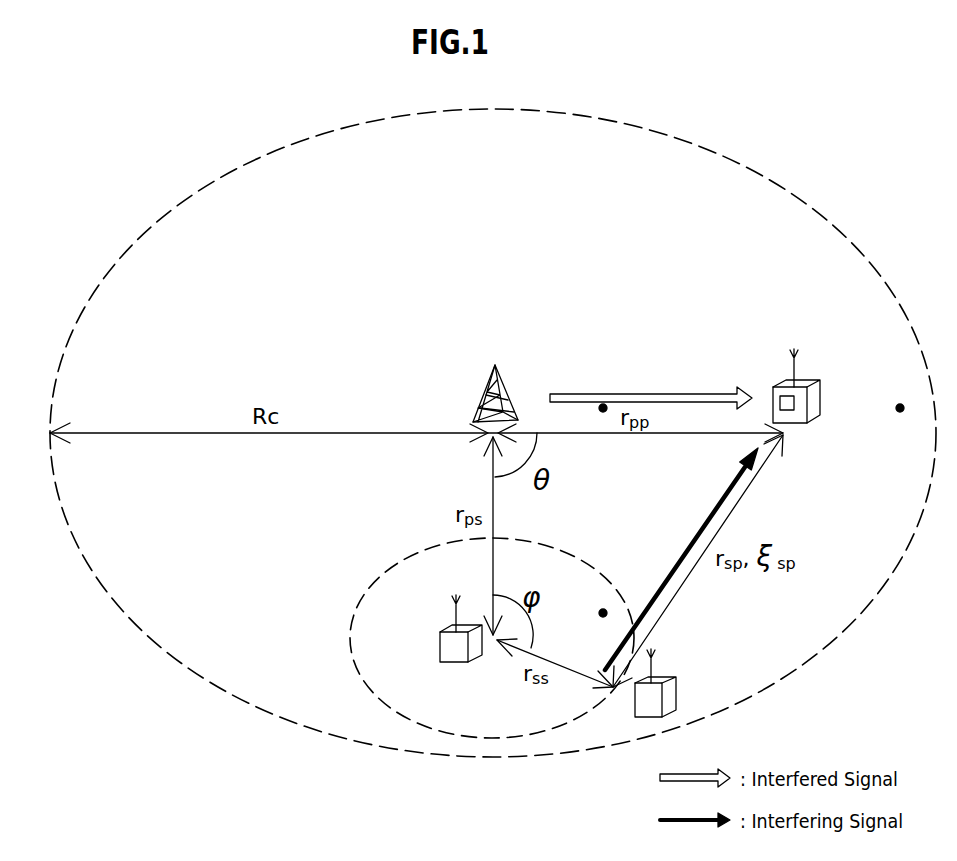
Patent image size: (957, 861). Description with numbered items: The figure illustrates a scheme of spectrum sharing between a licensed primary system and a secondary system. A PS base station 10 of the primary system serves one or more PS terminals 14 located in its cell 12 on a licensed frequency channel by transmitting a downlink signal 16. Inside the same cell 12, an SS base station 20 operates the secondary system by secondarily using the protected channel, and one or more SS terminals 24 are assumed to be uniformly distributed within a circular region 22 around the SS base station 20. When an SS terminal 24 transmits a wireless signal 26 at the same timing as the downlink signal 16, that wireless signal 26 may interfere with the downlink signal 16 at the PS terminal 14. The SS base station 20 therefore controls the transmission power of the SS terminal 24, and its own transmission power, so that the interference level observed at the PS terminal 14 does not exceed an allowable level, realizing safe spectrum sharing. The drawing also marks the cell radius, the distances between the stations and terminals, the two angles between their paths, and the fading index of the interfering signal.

The PS base station 10 is at (520, 385).
The cell 12 is at (790, 190).
The PS terminal 14 is at (813, 372).
The downlink signal 16 is at (608, 396).
The SS base station 20 is at (452, 628).
The secondary cell coverage area 22 is at (350, 633).
The SS terminal 24 is at (678, 688).
The wireless signal 26 is at (684, 557).